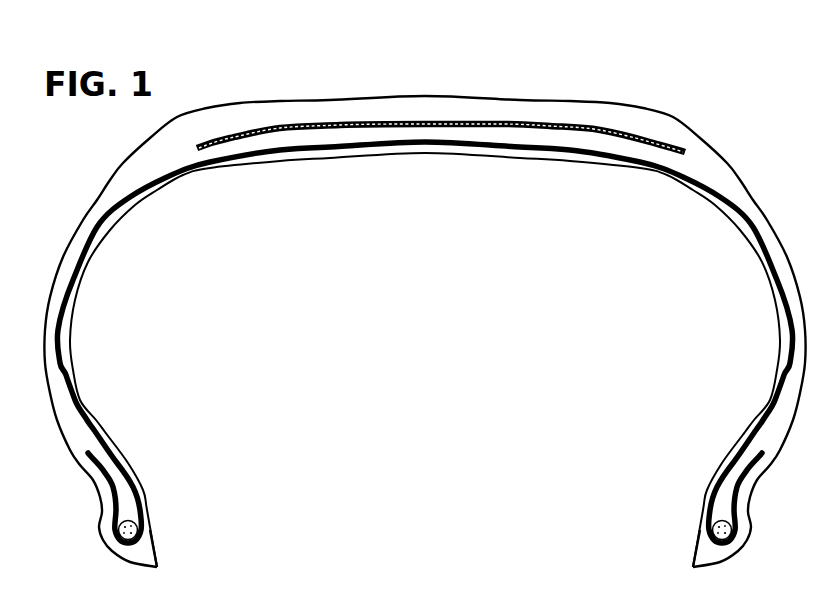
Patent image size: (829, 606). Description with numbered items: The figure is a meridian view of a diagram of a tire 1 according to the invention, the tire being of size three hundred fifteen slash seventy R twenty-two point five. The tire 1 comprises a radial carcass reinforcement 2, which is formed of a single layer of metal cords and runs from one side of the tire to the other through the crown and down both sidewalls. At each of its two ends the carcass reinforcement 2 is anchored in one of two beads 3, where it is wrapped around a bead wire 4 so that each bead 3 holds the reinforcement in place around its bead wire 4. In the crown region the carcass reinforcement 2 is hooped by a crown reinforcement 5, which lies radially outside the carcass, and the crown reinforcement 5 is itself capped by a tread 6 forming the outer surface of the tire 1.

The tire 1 is at (668, 72).
The radial carcass reinforcement 2 is at (66, 352).
The beads 3 is at (148, 555).
The bead wires 4 is at (140, 523).
The crown reinforcement 5 is at (263, 133).
The tread 6 is at (360, 97).